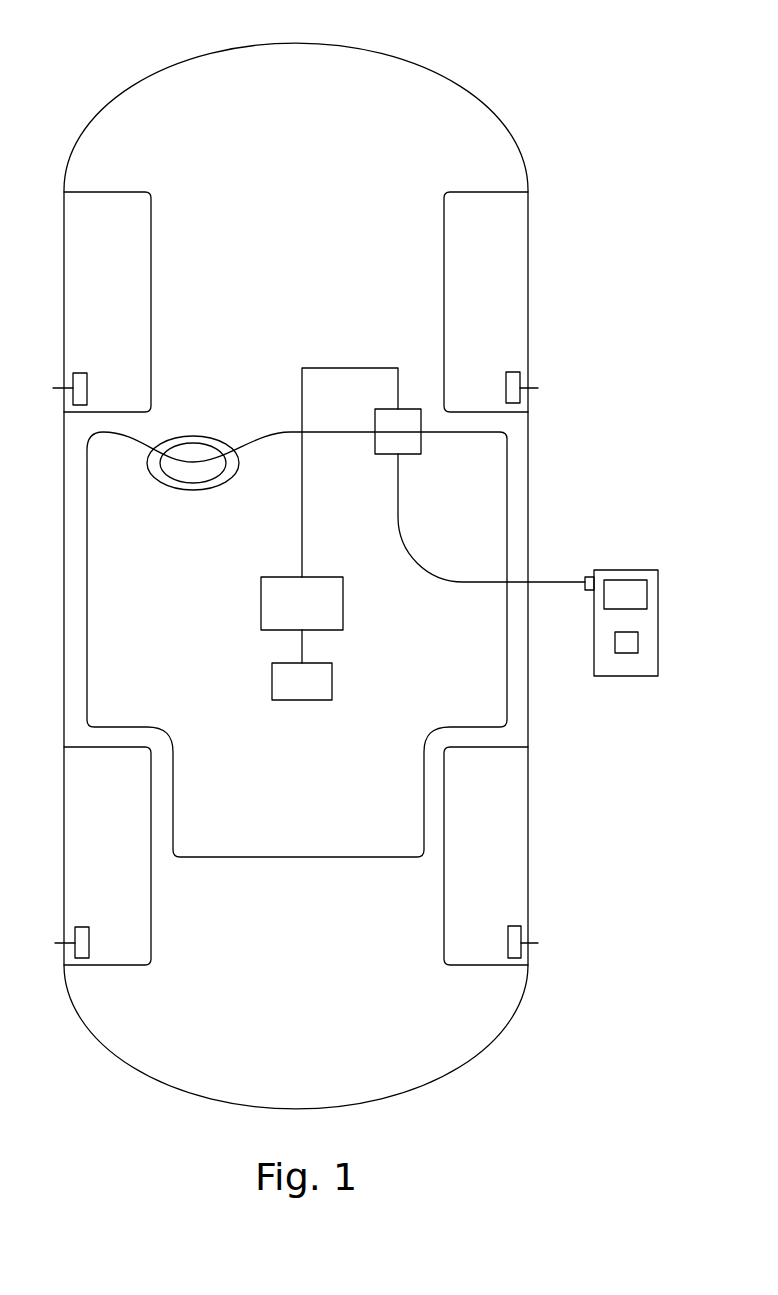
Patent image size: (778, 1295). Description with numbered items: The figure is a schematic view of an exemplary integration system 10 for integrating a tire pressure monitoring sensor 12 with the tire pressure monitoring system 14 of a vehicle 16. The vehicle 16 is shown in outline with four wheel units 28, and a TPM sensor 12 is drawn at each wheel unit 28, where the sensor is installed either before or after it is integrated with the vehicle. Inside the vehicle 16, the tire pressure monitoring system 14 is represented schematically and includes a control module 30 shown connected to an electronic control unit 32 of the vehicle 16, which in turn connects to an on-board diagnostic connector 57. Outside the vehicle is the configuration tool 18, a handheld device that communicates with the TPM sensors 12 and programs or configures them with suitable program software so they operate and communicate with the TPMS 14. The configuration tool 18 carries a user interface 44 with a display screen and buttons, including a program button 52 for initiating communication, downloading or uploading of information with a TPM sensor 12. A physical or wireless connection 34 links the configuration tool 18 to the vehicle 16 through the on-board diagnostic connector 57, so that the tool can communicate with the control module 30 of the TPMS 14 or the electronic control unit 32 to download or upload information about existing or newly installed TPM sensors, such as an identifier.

The integration system 10 is at (609, 414).
The tire pressure monitoring sensor 12 is at (87, 388).
The tire pressure monitoring system 14 is at (179, 663).
The vehicle 16 is at (452, 55).
The configuration tool 18 is at (627, 570).
The wheel unit 28 is at (64, 294).
The control module 30 is at (272, 683).
The electronic control unit 32 is at (261, 603).
The connection 34 is at (412, 555).
The user interface 44 is at (675, 564).
The program button 52 is at (638, 642).
The on-board diagnostic connector 57 is at (421, 445).